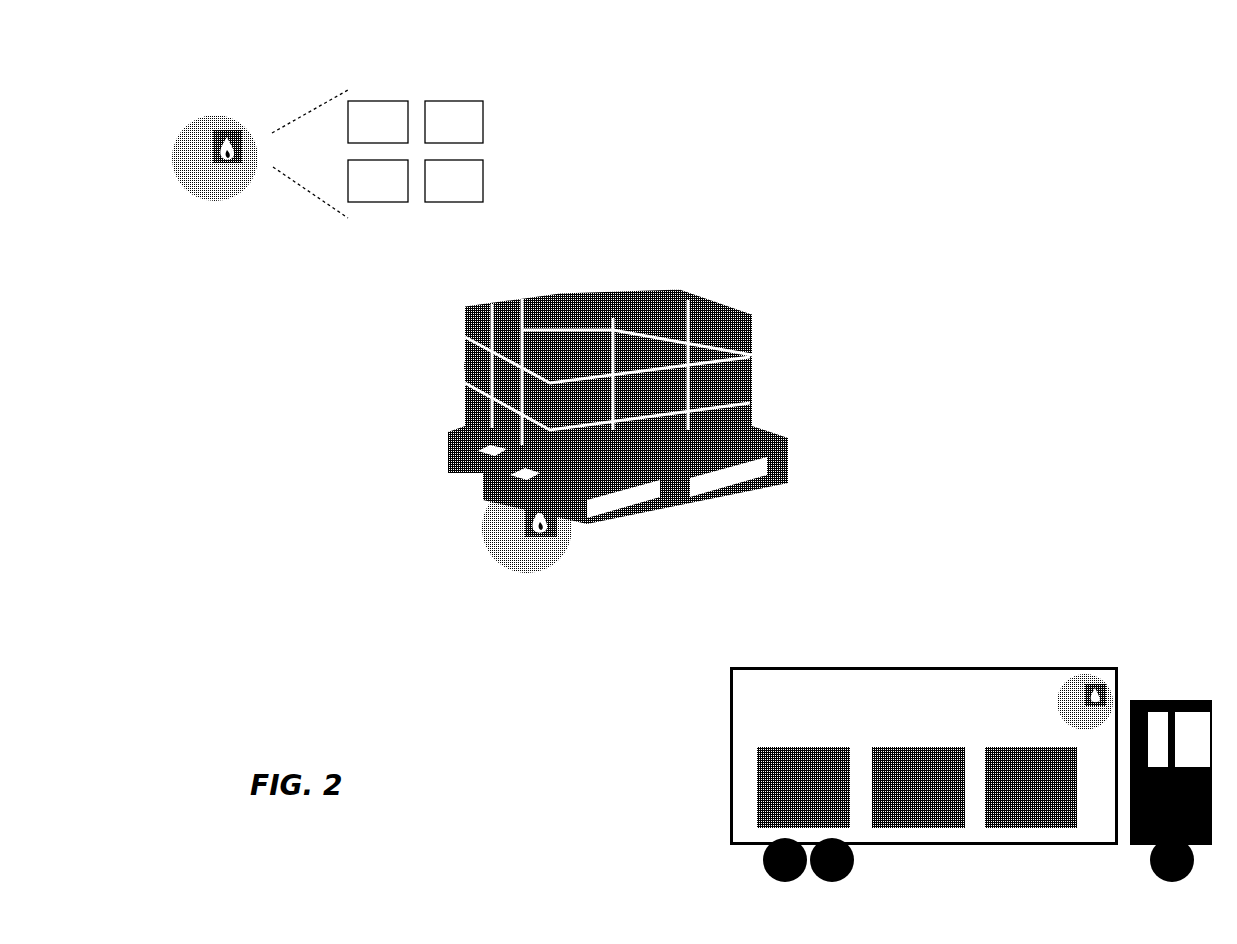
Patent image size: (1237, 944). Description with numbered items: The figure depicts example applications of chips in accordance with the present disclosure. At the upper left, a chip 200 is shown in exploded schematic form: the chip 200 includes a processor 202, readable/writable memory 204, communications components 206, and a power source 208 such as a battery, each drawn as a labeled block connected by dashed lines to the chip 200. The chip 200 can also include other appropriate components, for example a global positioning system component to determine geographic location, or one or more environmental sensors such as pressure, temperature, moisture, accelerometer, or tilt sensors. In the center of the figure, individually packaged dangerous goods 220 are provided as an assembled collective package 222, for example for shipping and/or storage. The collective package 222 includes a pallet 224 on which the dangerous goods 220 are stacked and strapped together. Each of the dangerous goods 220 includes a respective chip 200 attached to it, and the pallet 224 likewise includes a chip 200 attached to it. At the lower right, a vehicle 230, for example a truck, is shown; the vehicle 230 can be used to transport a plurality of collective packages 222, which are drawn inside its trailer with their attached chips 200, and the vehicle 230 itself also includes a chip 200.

The chip 200 is at (215, 117).
The processor 202 is at (380, 101).
The readable/writable memory 204 is at (465, 101).
The communications components 206 is at (372, 202).
The power source 208 is at (483, 176).
The dangerous goods 220 is at (705, 300).
The collective package 222 is at (762, 532).
The pallet 224 is at (788, 462).
The vehicle 230 is at (1162, 630).